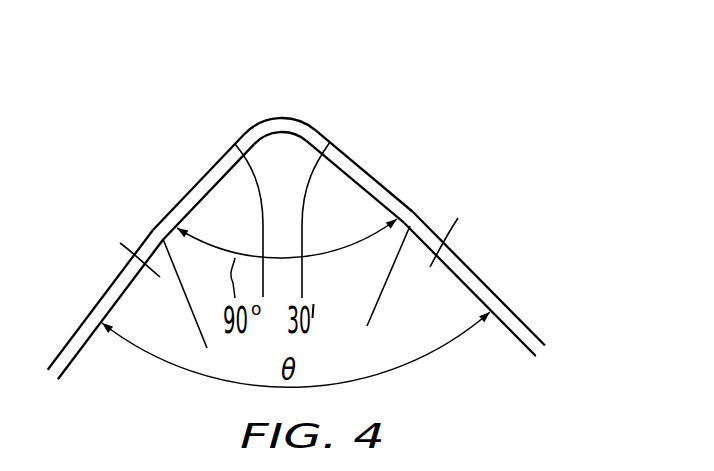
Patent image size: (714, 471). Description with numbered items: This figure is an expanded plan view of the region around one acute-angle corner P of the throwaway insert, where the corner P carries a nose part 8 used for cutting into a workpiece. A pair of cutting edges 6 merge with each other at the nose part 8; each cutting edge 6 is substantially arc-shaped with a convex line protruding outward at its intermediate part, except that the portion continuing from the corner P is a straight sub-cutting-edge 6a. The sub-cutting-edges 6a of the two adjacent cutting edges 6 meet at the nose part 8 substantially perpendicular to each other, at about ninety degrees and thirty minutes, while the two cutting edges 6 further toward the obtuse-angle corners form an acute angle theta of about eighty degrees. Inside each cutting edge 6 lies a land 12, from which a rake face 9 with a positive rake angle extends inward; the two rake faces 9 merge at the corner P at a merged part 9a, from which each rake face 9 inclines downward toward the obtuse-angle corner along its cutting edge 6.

The nose part 8 is at (295, 112).
The corner P is at (270, 119).
The sub-cutting-edge 6a is at (190, 188).
The rake face 9 is at (288, 234).
The merged part 9a is at (292, 220).
The cutting edge 6 is at (112, 284).
The land 12 is at (537, 339).